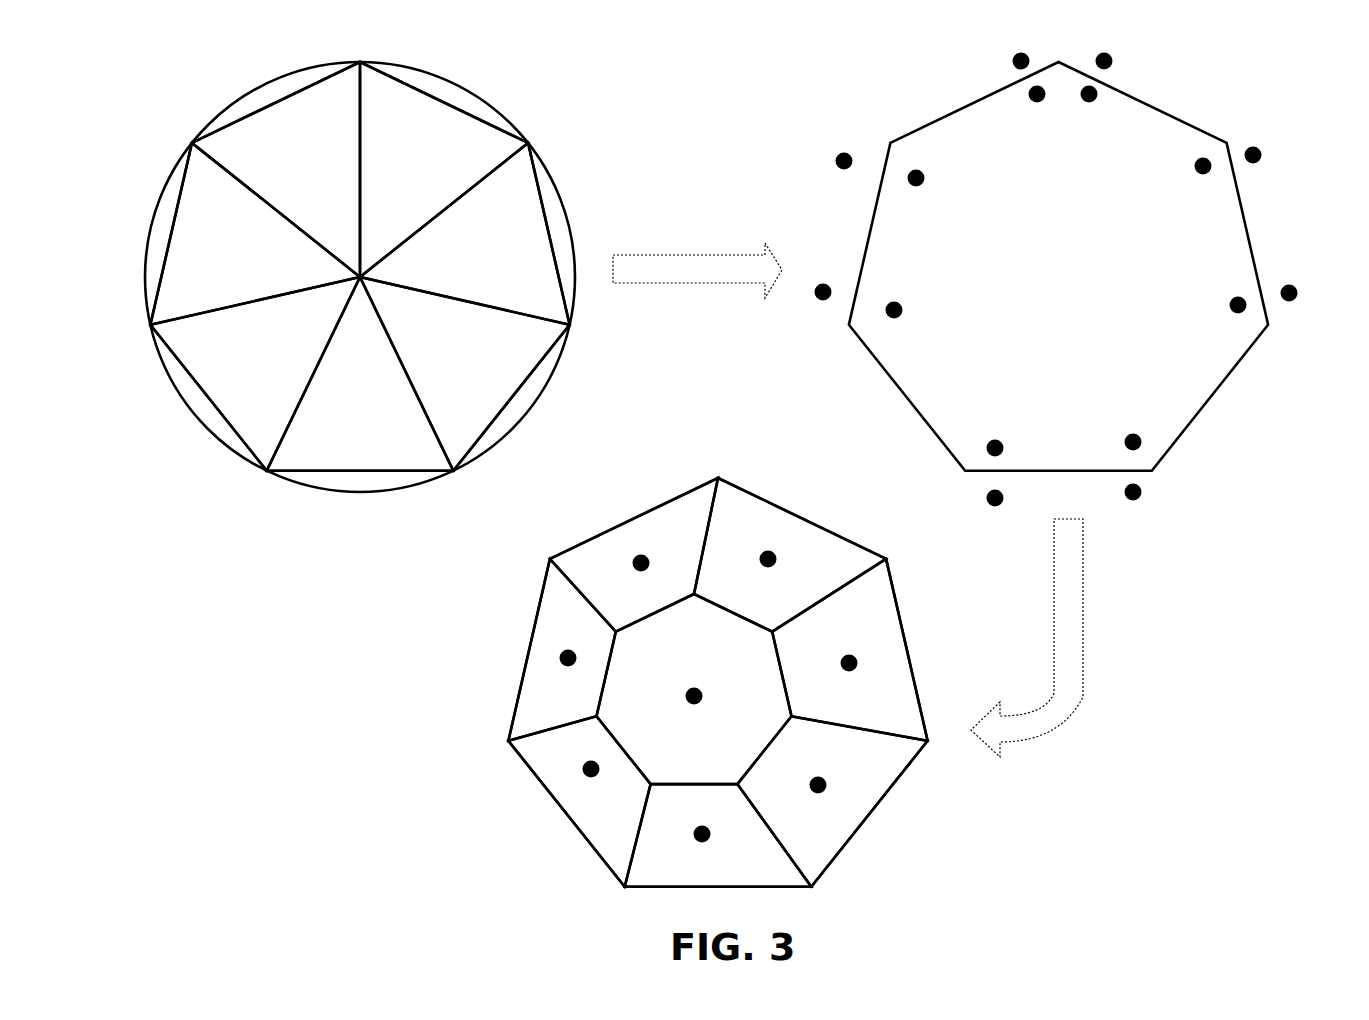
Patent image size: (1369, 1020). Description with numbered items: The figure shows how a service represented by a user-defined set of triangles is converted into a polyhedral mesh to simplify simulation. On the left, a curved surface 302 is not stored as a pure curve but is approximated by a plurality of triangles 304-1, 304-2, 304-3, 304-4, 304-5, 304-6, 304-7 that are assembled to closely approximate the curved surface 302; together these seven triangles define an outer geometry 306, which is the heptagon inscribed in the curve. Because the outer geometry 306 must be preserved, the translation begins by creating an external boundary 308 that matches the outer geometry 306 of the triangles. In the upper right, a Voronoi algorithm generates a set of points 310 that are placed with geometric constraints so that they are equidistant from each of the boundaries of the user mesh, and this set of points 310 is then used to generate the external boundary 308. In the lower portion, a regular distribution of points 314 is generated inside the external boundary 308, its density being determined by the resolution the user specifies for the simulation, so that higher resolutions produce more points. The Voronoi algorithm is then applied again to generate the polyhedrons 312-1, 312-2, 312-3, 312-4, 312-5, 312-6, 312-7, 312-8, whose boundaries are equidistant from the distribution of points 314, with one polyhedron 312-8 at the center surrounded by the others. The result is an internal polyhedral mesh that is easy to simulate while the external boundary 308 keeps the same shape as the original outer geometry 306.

The curved surface 302 is at (258, 85).
The outer geometry 306 is at (447, 103).
The triangle 304-1 is at (445, 181).
The triangle 304-2 is at (505, 264).
The triangle 304-3 is at (484, 356).
The triangle 304-4 is at (389, 407).
The triangle 304-5 is at (289, 362).
The triangle 304-6 is at (265, 267).
The triangle 304-7 is at (329, 171).
The external boundary 308 is at (1202, 128).
The set of points 310 is at (1292, 284).
The polyhedron 312-1 is at (796, 611).
The polyhedron 312-2 is at (895, 721).
The polyhedron 312-3 is at (840, 831).
The polyhedron 312-4 is at (739, 875).
The polyhedron 312-5 is at (629, 809).
The polyhedron 312-6 is at (585, 707).
The polyhedron 312-7 is at (660, 596).
The polyhedron 312-8 is at (715, 764).
The distribution of points 314 is at (768, 550).